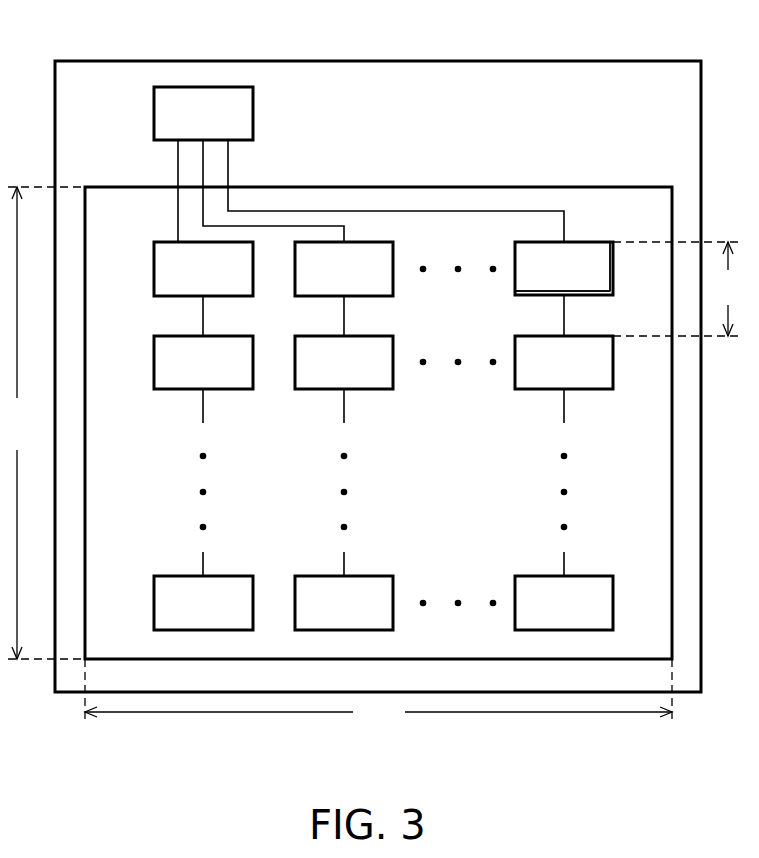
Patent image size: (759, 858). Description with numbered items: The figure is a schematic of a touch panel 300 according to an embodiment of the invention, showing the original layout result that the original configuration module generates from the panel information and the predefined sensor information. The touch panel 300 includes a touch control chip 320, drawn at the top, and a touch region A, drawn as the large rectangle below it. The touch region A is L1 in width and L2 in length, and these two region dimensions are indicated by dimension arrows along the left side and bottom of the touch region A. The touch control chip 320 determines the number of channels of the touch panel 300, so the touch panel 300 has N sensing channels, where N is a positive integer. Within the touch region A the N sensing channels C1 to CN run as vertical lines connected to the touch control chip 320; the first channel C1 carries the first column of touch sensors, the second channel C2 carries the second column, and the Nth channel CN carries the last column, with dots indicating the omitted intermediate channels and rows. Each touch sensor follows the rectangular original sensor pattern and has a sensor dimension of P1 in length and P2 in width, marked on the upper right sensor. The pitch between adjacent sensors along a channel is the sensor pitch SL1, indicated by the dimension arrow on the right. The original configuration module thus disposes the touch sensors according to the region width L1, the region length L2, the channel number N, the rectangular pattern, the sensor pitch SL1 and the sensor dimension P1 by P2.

The touch panel 300 is at (660, 60).
The touch control chip 320 is at (253, 113).
The touch region A is at (673, 461).
The sensor length P1 is at (565, 290).
The sensor width P2 is at (610, 277).
The first sensing channel C1 is at (204, 316).
The second sensing channel C2 is at (345, 316).
The Nth sensing channel CN is at (565, 316).
The region width L1 is at (46, 423).
The region length L2 is at (378, 693).
The sensor pitch SL1 is at (682, 289).